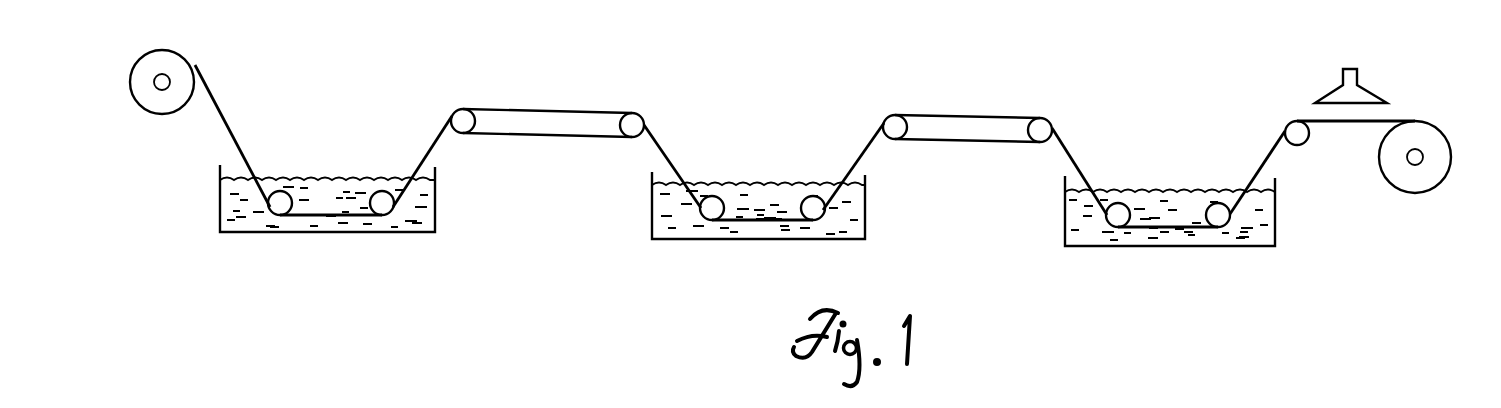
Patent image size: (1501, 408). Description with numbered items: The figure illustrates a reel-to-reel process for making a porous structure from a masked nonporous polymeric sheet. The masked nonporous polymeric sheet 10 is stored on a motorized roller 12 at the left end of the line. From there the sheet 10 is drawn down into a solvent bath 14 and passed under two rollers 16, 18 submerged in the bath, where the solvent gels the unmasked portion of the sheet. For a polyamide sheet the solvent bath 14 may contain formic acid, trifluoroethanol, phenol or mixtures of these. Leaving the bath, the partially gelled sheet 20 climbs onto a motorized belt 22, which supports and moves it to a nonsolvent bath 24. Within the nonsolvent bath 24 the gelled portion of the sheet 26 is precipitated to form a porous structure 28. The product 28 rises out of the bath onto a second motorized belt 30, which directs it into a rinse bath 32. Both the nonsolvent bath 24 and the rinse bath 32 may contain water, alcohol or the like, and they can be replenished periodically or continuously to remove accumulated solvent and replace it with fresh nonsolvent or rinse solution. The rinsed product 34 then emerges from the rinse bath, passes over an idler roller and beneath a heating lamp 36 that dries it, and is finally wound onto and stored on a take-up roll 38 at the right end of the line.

The masked nonporous polymeric sheet 10 is at (218, 116).
The motorized roller 12 is at (178, 72).
The solvent bath 14 is at (330, 190).
The roller 16 is at (282, 215).
The roller 18 is at (378, 217).
The partially gelled sheet 20 is at (433, 143).
The motorized belt 22 is at (555, 137).
The nonsolvent bath 24 is at (753, 197).
The gelled portion of the sheet 26 is at (775, 222).
The porous structure 28 is at (860, 158).
The motorized belt 30 is at (968, 142).
The rinse bath 32 is at (1160, 208).
The rinsed product 34 is at (1263, 163).
The heating lamp 36 is at (1370, 90).
The take-up roll 38 is at (1440, 147).